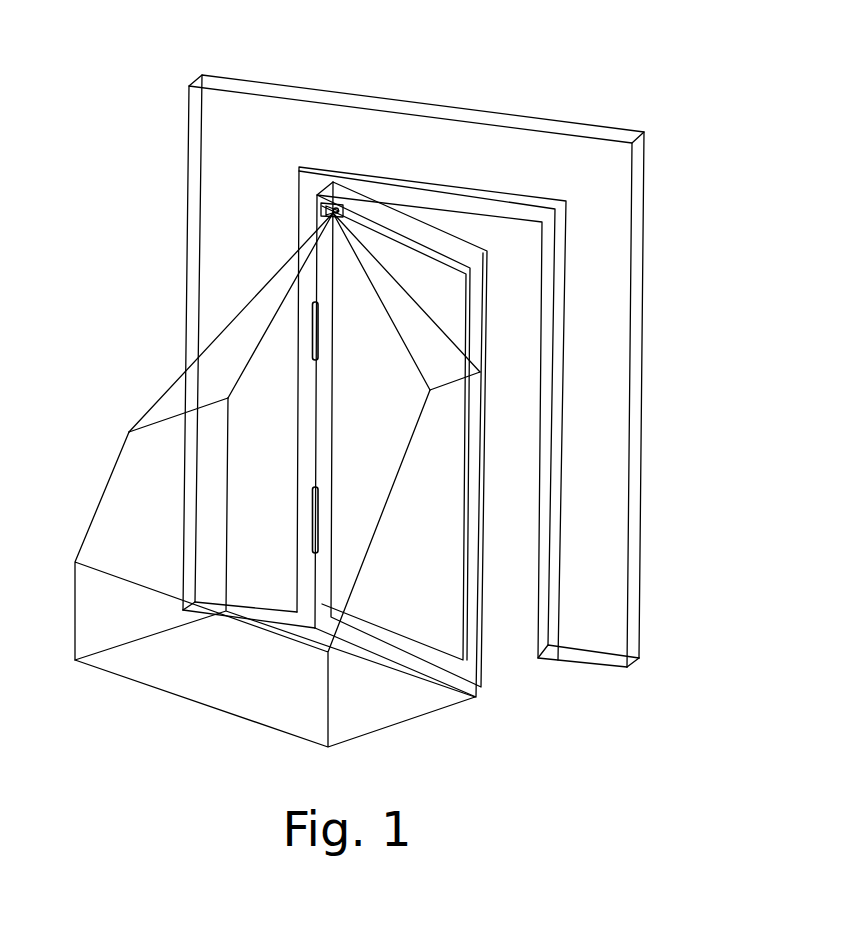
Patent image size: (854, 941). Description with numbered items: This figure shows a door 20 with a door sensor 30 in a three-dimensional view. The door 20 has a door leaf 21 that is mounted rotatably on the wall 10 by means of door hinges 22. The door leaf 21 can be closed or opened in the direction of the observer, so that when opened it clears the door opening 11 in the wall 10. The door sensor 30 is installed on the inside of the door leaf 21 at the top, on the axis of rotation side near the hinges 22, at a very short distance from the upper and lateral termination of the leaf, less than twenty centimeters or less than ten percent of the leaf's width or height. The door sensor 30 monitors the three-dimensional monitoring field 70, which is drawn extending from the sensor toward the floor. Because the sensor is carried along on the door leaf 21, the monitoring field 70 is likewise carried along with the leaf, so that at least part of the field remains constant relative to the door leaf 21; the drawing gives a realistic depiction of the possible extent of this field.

The door 20 is at (515, 98).
The wall 10 is at (582, 181).
The door opening 11 is at (505, 253).
The door leaf 21 is at (473, 308).
The monitoring field 70 is at (373, 416).
The door hinges 22 is at (313, 323).
The door sensor 30 is at (323, 206).